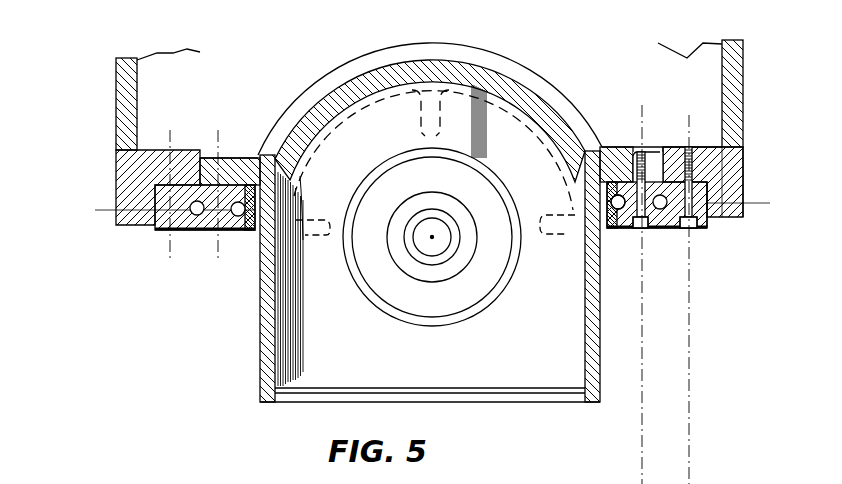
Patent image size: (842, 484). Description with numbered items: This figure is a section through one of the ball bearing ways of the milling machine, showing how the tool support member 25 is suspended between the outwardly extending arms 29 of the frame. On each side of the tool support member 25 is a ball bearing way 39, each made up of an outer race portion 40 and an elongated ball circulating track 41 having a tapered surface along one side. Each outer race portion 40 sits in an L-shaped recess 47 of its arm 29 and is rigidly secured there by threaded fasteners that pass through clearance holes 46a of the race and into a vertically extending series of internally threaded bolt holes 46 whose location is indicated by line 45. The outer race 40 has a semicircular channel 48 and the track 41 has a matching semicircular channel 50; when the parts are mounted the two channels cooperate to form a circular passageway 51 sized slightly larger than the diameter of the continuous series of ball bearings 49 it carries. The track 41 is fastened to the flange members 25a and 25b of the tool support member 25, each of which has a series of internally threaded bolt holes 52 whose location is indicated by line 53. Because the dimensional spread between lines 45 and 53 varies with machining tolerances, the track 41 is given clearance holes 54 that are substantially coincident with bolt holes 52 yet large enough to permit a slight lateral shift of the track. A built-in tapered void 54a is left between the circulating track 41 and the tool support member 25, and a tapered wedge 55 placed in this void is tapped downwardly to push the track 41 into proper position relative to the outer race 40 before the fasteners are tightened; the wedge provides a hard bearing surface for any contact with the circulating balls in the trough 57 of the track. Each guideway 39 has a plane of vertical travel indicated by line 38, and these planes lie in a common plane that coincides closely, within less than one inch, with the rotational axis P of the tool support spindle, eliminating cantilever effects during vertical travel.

The tool support member 25 is at (260, 387).
The flange member 25a is at (243, 160).
The flange member 25b is at (612, 170).
The outwardly extending arm 29 is at (122, 84).
The line 38 is at (105, 207).
The ball bearing way 39 is at (183, 260).
The outer race portion 40 is at (160, 232).
The ball circulating track 41 is at (230, 262).
The line 45 is at (692, 359).
The internally threaded bolt hole 46 is at (745, 112).
The clearance hole 46a is at (707, 230).
The L-shaped recess 47 is at (745, 140).
The semicircular channel 48 is at (687, 150).
The ball bearing 49 is at (735, 178).
The semicircular channel 50 is at (652, 232).
The circular passageway 51 is at (670, 232).
The internally threaded bolt hole 52 is at (652, 165).
The line 53 is at (640, 438).
The clearance hole 54 is at (618, 229).
The tapered void 54a is at (290, 192).
The tapered wedge 55 is at (278, 236).
The trough 57 is at (641, 150).
The rotational axis P is at (432, 237).